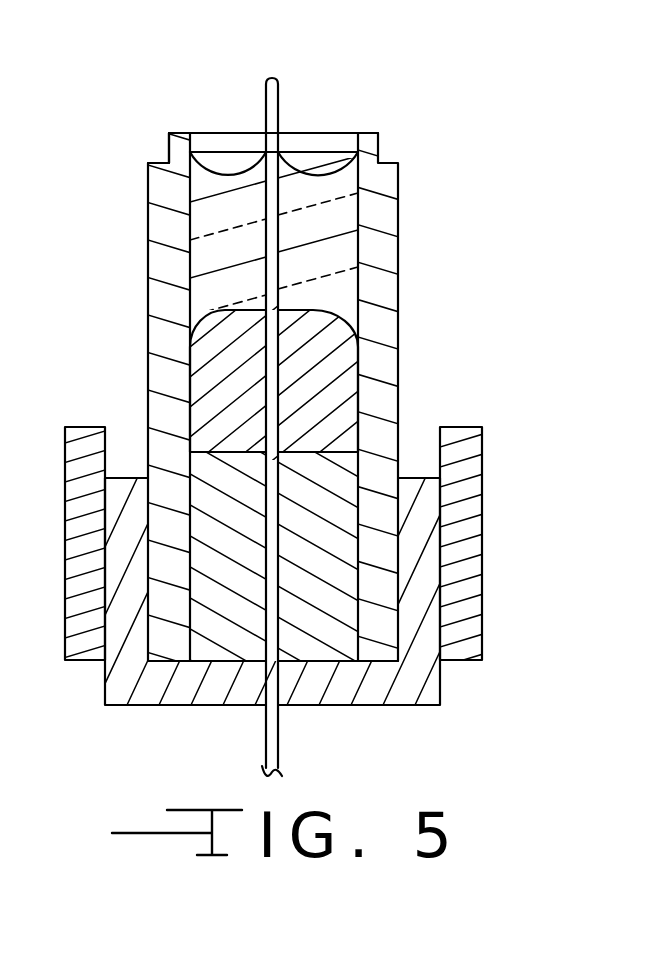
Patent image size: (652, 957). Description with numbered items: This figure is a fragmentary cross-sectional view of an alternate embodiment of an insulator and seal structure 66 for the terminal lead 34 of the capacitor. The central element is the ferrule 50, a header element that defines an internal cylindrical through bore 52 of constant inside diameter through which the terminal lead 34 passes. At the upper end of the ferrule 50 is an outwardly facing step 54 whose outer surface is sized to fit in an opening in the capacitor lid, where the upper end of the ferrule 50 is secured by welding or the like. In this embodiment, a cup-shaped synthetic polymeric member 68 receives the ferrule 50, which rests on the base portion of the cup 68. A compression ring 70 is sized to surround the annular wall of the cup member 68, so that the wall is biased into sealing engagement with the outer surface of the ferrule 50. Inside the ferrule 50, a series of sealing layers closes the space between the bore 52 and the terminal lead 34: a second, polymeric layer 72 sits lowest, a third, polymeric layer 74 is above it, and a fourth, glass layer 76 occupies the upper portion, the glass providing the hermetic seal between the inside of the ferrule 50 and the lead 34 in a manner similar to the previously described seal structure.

The terminal lead 34 is at (282, 102).
The ferrule 50 is at (387, 370).
The through bore 52 is at (352, 145).
The outwardly facing step 54 is at (167, 163).
The insulator and seal structure 66 is at (515, 257).
The cup-shaped synthetic polymeric member 68 is at (423, 537).
The compression ring 70 is at (463, 570).
The second polymeric layer 72 is at (335, 487).
The third polymeric layer 74 is at (327, 345).
The fourth glass layer 76 is at (340, 215).